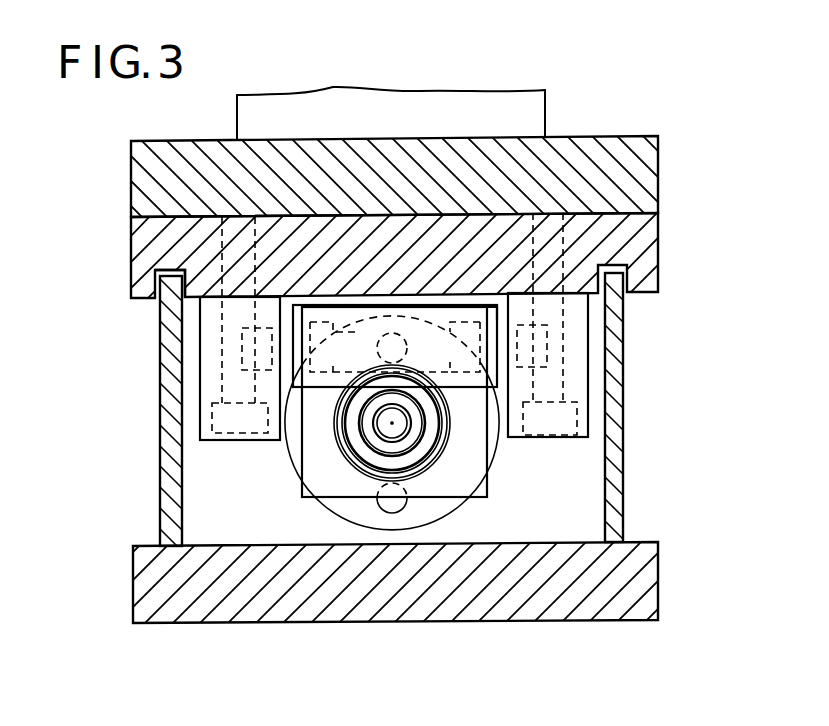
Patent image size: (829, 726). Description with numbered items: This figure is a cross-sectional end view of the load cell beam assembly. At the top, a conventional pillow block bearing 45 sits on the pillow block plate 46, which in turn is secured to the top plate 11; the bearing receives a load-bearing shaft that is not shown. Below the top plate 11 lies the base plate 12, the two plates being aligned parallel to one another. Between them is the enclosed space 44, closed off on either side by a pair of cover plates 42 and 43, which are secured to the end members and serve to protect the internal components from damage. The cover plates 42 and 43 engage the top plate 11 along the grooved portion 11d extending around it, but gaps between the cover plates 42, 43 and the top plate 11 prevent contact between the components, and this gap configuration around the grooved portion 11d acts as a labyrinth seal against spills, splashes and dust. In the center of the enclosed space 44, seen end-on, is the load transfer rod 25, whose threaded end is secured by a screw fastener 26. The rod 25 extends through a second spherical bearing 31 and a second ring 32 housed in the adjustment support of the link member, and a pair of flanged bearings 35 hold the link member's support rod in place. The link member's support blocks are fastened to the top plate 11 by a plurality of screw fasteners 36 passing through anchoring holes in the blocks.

The top plate 11 is at (386, 255).
The grooved portion 11d is at (153, 278).
The base plate 12 is at (652, 595).
The load transfer rod 25 is at (400, 425).
The screw fastener 26 is at (355, 300).
The second spherical bearing 31 is at (362, 437).
The second ring 32 is at (365, 455).
The flanged bearings 35 is at (495, 310).
The screw fasteners 36 is at (235, 445).
The cover plate 42 is at (160, 408).
The cover plate 43 is at (623, 388).
The enclosed space 44 is at (593, 507).
The pillow block bearing 45 is at (538, 110).
The pillow block plate 46 is at (650, 167).